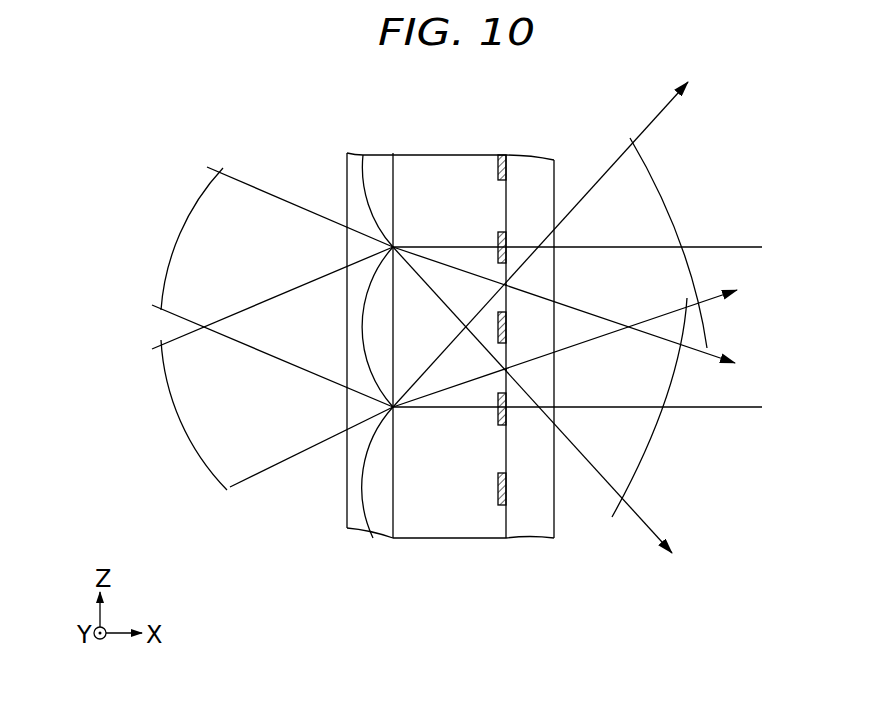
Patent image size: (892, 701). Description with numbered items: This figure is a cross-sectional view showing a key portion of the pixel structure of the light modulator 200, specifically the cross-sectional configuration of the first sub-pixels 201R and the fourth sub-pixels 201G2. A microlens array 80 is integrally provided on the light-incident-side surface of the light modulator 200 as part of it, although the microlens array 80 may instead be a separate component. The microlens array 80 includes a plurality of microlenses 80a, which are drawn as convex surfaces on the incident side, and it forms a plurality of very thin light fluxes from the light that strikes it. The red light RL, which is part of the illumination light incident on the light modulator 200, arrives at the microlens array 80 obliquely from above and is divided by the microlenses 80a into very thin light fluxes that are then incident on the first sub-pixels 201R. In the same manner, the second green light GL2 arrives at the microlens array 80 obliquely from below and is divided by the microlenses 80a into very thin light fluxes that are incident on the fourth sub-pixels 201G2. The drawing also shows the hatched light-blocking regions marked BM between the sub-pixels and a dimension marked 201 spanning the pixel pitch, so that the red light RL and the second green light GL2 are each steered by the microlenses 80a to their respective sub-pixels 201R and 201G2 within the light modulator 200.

The microlens array 80 is at (362, 527).
The microlens 80a is at (362, 332).
The light modulator 200 is at (473, 351).
The black matrix BM is at (497, 240).
The fourth sub-pixel 201G2 is at (497, 280).
The first sub-pixel 201R is at (497, 378).
The pixel 201 is at (755, 247).
The red light RL is at (648, 448).
The second green light GL2 is at (670, 211).